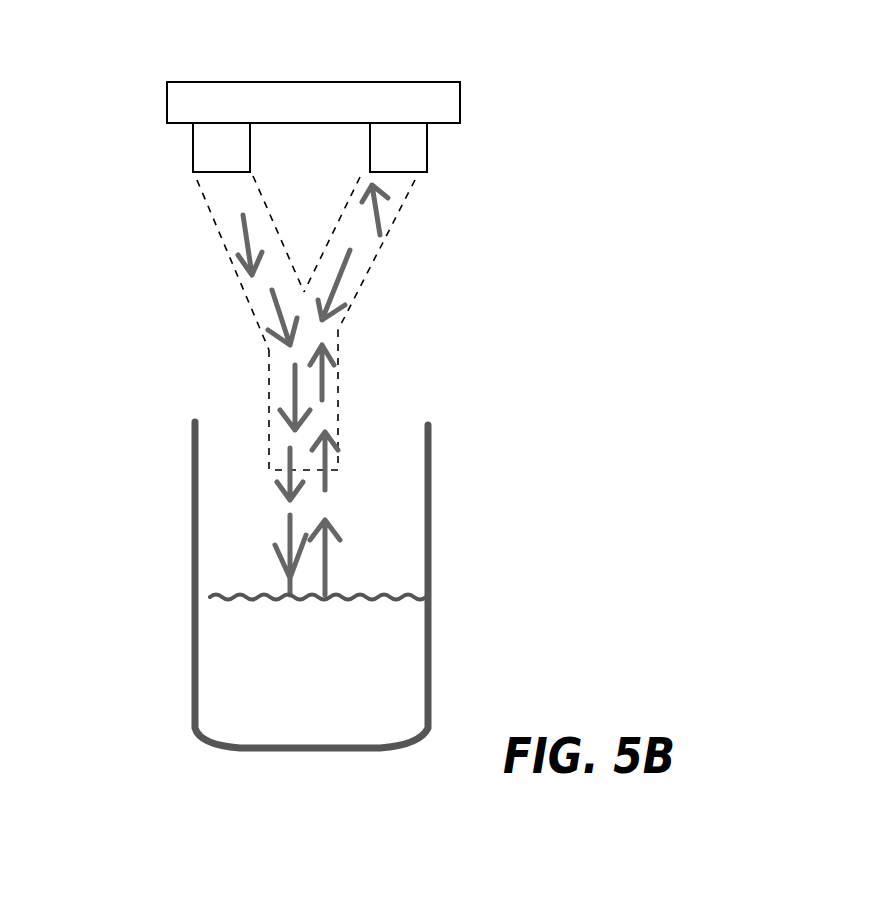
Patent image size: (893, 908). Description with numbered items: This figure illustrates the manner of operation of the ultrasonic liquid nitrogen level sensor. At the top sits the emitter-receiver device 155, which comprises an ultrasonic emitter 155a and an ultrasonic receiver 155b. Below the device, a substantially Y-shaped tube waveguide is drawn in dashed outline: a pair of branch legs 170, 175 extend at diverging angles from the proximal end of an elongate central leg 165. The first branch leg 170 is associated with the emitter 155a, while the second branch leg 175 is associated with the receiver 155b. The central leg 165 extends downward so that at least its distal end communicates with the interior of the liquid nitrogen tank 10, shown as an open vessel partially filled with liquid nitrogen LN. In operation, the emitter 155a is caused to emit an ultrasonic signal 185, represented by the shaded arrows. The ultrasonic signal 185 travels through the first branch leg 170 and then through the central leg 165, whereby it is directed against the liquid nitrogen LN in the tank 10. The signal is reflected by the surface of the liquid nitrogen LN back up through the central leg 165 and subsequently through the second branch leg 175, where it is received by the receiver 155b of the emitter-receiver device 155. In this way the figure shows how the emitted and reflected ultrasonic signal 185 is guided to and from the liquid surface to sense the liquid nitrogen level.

The emitter-receiver device 155 is at (437, 97).
The ultrasonic emitter 155a is at (207, 145).
The ultrasonic receiver 155b is at (418, 145).
The ultrasonic signal 185 is at (247, 255).
The first branch leg 170 is at (253, 317).
The second branch leg 175 is at (350, 307).
The central leg 165 is at (337, 403).
The liquid nitrogen tank 10 is at (428, 552).
The liquid nitrogen LN is at (220, 597).